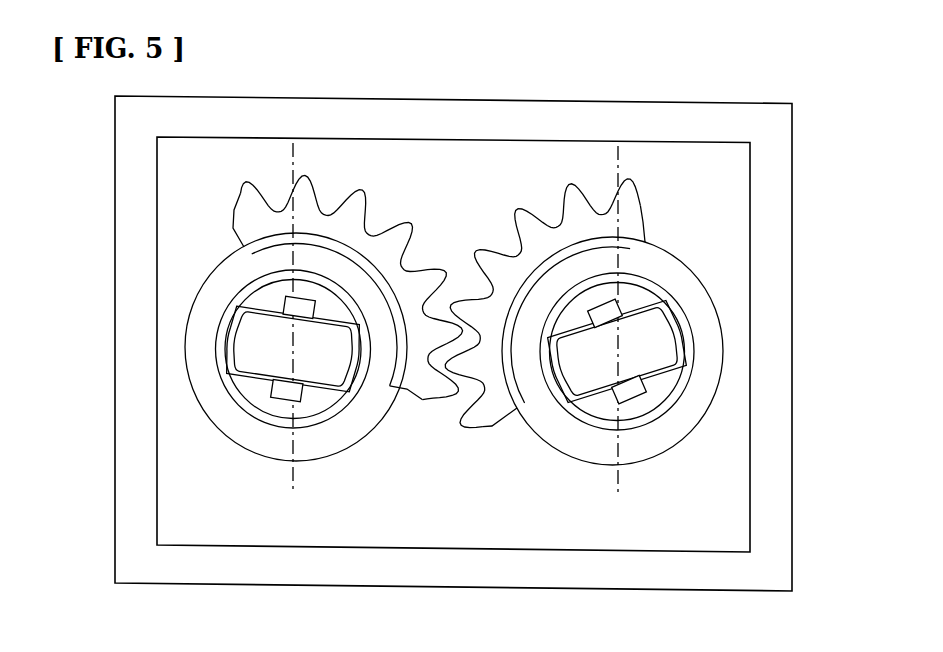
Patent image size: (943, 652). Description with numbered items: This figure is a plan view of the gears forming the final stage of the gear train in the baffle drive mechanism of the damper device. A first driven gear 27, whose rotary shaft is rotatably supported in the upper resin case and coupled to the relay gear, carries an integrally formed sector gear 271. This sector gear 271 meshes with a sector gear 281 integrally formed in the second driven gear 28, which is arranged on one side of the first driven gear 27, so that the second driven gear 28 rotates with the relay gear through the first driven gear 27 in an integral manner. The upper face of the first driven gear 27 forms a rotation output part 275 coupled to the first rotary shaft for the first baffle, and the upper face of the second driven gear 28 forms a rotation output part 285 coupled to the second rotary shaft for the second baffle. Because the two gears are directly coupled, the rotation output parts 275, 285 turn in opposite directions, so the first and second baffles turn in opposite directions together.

The first driven gear 27 is at (655, 460).
The second driven gear 28 is at (332, 455).
The sector gear 271 is at (635, 223).
The rotation output part 275 is at (658, 358).
The sector gear 281 is at (233, 237).
The rotation output part 285 is at (263, 367).